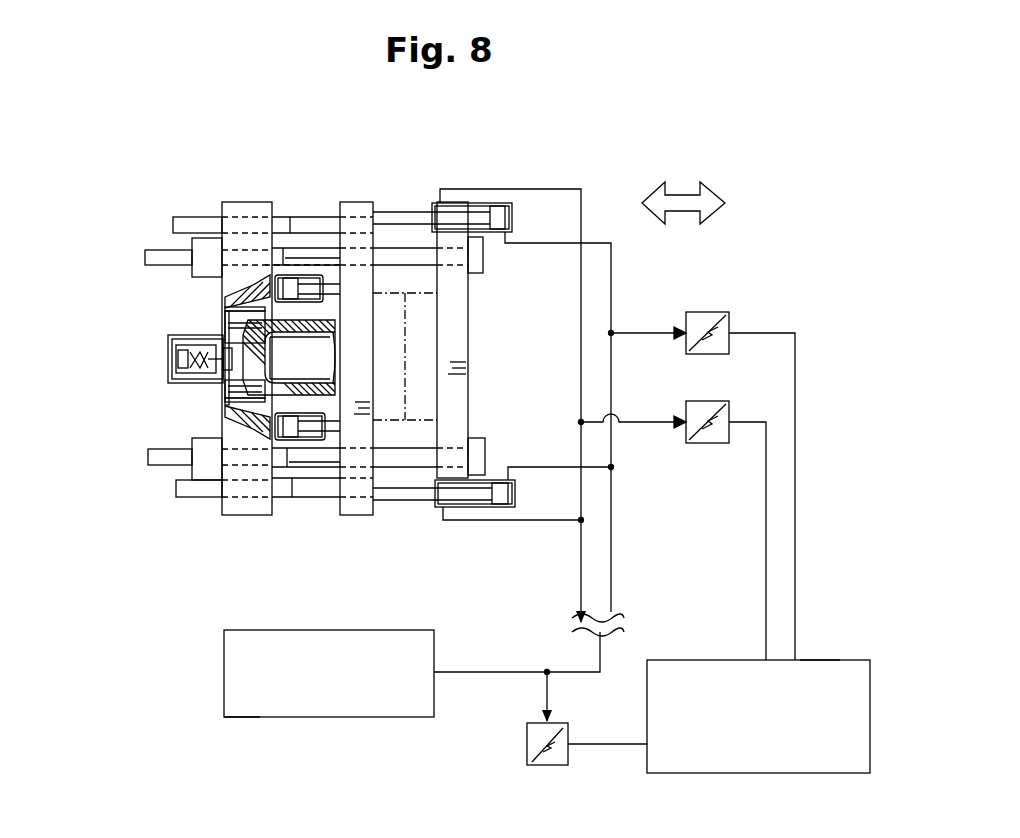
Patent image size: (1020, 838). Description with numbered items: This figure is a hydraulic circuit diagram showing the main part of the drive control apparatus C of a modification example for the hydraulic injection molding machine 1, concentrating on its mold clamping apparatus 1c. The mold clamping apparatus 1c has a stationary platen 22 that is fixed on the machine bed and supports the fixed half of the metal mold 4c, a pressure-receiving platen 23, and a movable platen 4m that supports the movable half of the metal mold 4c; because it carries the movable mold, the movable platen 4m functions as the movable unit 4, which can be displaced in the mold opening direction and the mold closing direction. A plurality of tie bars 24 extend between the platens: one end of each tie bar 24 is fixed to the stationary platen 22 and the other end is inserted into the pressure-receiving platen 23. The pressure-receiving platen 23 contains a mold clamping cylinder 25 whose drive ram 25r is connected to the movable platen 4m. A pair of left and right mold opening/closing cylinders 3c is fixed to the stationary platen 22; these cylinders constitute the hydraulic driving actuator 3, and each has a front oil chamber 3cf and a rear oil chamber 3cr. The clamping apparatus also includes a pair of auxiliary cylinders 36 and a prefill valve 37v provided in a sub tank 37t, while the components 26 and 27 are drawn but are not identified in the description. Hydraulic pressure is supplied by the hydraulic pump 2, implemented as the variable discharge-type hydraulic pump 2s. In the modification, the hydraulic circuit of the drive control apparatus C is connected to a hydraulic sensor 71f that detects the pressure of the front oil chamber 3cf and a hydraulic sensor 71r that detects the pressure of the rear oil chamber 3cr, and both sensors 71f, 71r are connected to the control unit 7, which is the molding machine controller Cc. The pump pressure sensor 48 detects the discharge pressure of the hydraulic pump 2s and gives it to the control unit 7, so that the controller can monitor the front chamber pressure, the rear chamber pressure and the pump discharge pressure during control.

The hydraulic injection molding machine 1 is at (175, 163).
The mold clamping apparatus 1c is at (185, 528).
The hydraulic pump 2 is at (325, 717).
The variable discharge-type hydraulic pump 2s is at (250, 717).
The hydraulic driving actuator 3 is at (423, 530).
The mold opening/closing cylinder 3c is at (500, 215).
The rear oil chamber 3cr is at (480, 507).
The front oil chamber 3cf is at (510, 507).
The movable unit 4 is at (340, 183).
The metal mold 4c is at (396, 434).
The movable platen 4m is at (395, 245).
The control unit 7 is at (700, 660).
The stationary platen 22 is at (470, 295).
The pressure-receiving platen 23 is at (225, 420).
The tie bar 24 is at (415, 246).
The mold clamping cylinder 25 is at (200, 318).
The drive ram 25r is at (222, 318).
The ejector rod 26 is at (160, 243).
The ejector plate 27 is at (247, 198).
The auxiliary cylinder 36 is at (300, 275).
The sub tank 37t is at (170, 338).
The prefill valve 37v is at (195, 382).
The pump pressure sensor 48 is at (527, 745).
The hydraulic sensor 71f is at (686, 322).
The hydraulic sensor 71r is at (705, 443).
The drive control apparatus C is at (760, 222).
The molding machine controller Cc is at (820, 660).